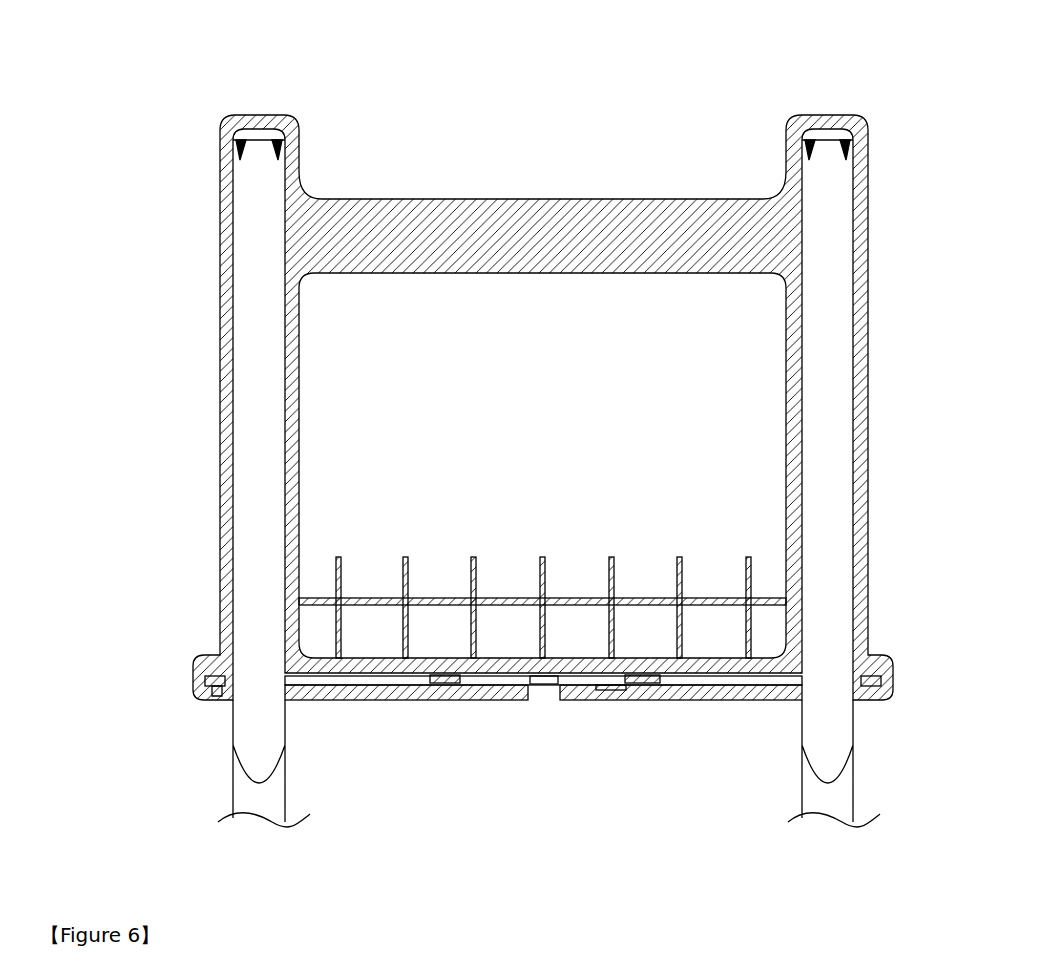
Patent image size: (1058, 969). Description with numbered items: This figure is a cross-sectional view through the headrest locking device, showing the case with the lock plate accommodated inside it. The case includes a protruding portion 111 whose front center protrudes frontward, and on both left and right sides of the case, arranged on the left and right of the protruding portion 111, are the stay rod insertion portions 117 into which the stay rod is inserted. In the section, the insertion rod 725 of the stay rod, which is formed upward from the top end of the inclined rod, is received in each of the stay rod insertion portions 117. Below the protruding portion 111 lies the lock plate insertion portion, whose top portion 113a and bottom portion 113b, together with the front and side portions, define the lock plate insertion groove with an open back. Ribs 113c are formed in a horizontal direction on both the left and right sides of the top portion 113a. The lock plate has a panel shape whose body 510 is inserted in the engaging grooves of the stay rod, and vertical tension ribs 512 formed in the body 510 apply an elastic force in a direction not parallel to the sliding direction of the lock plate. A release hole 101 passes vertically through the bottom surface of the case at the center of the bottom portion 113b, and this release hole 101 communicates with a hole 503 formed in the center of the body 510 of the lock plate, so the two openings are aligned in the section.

The protruding portion 111 is at (762, 397).
The stay rod insertion portion 117 is at (262, 106).
The insertion rod 725 is at (830, 180).
The rib 113c is at (298, 678).
The top portion 113a is at (505, 673).
The bottom portion 113b is at (612, 700).
The release hole 101 is at (549, 697).
The vertical tension rib 512 is at (445, 686).
The hole 503 is at (540, 686).
The body 510 is at (218, 694).